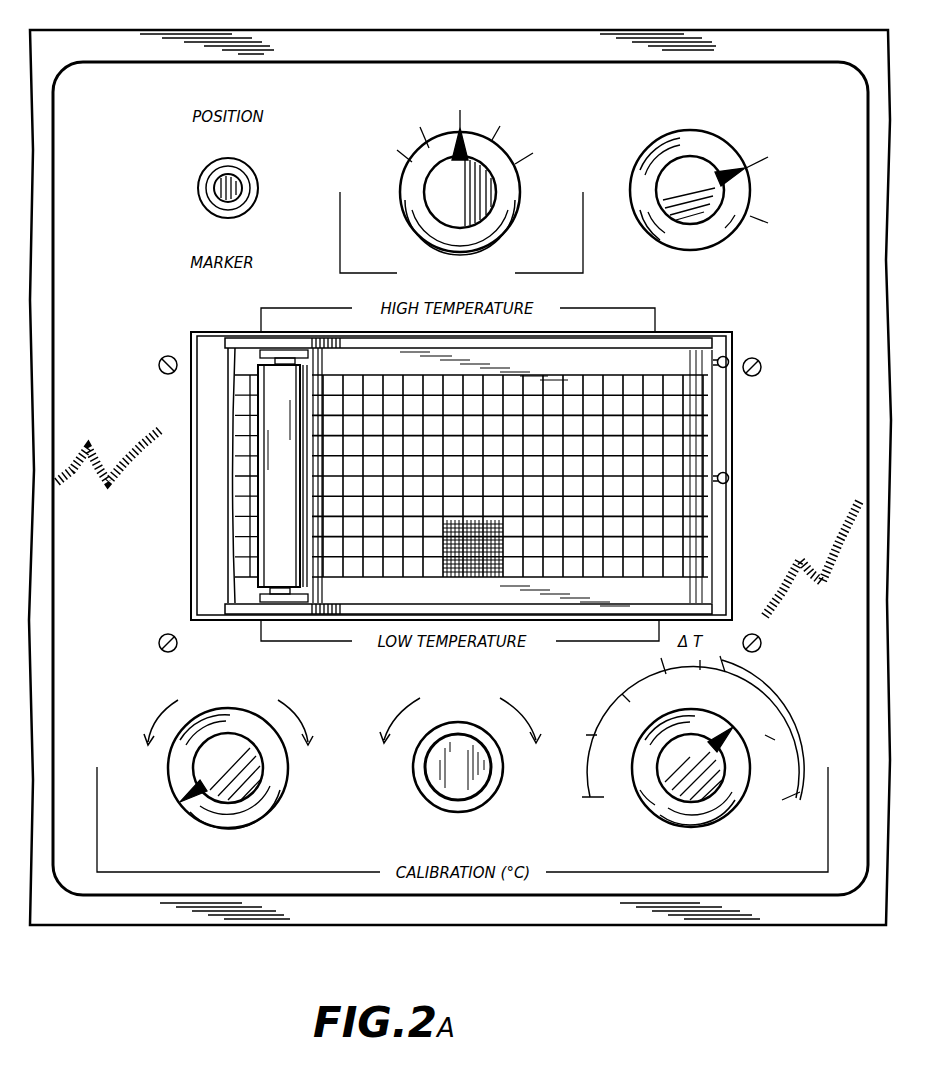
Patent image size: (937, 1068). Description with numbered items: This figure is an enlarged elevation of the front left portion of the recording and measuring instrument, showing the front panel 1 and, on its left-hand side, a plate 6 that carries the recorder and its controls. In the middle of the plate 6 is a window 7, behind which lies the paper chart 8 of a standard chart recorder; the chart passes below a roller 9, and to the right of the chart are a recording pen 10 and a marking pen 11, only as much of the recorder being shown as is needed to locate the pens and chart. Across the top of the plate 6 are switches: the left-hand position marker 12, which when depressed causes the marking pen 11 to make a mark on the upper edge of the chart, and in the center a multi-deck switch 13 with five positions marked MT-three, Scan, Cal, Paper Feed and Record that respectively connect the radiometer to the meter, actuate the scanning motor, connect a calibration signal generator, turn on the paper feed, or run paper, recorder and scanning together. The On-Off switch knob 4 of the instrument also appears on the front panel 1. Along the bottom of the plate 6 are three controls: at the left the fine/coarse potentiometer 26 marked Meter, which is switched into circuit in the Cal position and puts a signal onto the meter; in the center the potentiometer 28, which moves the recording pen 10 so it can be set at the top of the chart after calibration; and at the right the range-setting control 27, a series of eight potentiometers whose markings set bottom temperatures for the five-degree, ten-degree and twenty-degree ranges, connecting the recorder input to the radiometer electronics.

The front panel 1 is at (437, 55).
The plate 6 is at (88, 300).
The position marker 12 is at (234, 184).
The multi-deck switch 13 is at (448, 193).
The On-Off switch knob 4 is at (707, 170).
The window 7 is at (734, 433).
The paper chart 8 is at (537, 475).
The roller 9 is at (282, 447).
The recording pen 10 is at (729, 478).
The marking pen 11 is at (729, 358).
The fine/coarse potentiometer 26 is at (252, 785).
The potentiometer 28 is at (428, 783).
The range-setting control 27 is at (718, 800).